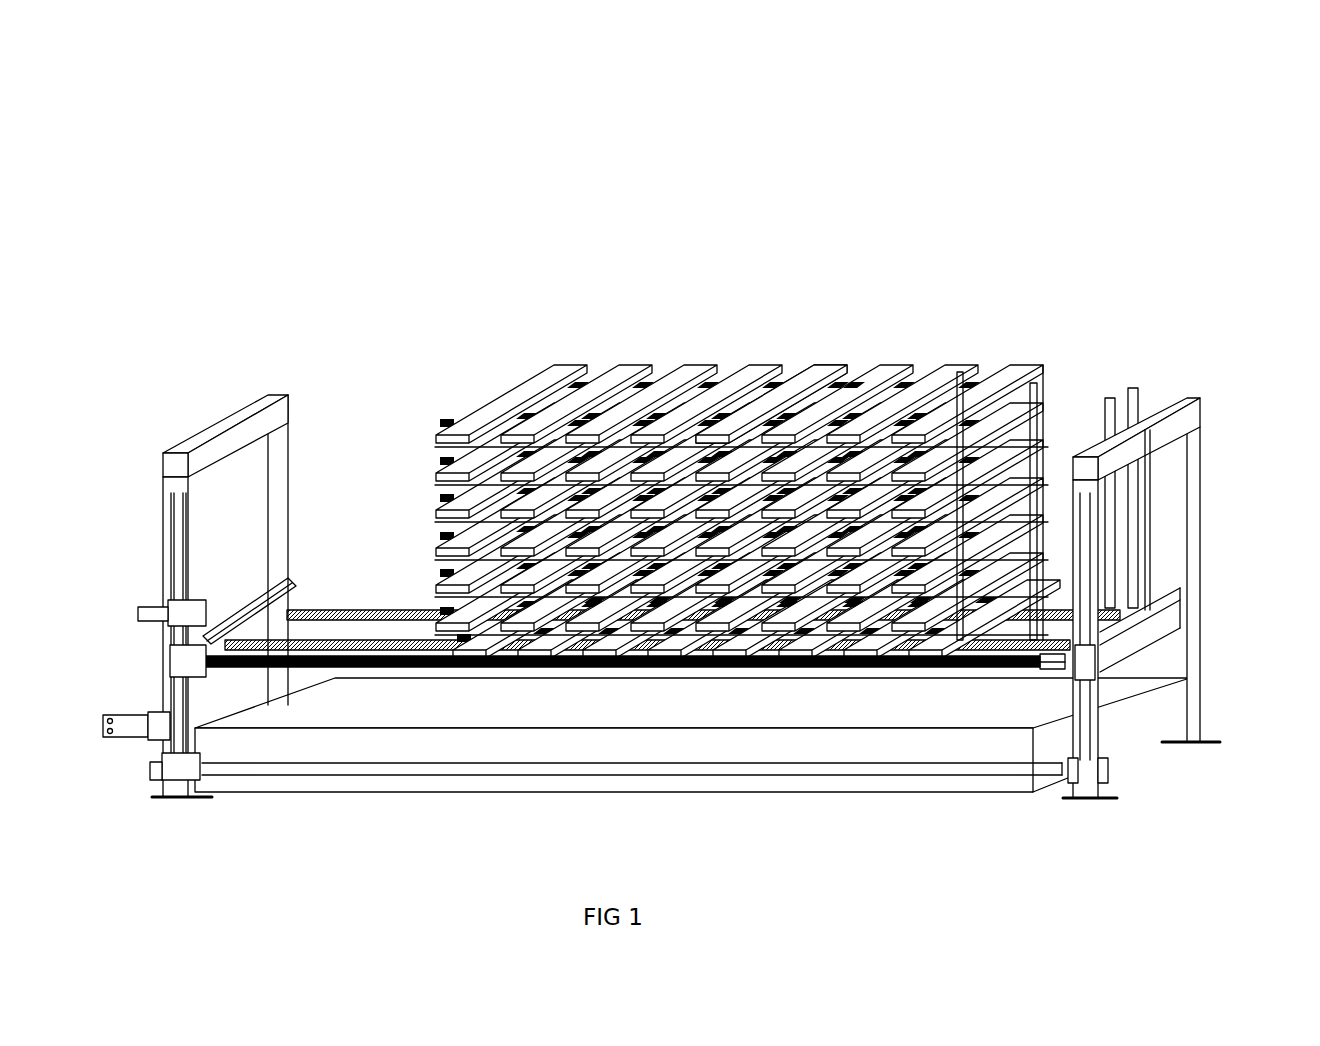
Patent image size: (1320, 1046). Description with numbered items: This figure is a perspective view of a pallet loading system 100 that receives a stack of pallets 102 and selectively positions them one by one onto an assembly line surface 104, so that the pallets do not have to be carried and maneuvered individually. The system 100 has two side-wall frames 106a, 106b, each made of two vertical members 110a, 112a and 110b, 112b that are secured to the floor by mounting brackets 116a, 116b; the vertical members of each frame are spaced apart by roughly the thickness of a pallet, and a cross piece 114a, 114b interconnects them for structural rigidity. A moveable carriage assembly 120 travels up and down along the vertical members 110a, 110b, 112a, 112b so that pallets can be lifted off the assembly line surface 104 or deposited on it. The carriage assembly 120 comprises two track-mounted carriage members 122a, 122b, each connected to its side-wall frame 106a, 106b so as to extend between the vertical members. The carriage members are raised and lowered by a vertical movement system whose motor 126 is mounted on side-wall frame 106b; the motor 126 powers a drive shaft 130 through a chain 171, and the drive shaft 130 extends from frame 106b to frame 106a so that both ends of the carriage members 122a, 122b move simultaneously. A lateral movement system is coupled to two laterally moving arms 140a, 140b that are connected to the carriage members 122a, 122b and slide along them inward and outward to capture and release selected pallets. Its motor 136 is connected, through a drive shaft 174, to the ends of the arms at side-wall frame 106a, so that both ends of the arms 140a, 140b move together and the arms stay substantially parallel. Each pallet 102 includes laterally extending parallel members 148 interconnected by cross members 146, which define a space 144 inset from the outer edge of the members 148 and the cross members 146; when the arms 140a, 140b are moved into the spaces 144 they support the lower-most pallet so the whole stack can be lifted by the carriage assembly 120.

The pallet loading system 100 is at (635, 215).
The pallets 102 is at (679, 443).
The assembly line surface 104 is at (692, 749).
The side-wall frame 106a is at (1154, 517).
The side-wall frame 106b is at (243, 572).
The vertical member 110a is at (1229, 584).
The vertical member 110b is at (336, 550).
The vertical member 112a is at (1059, 667).
The vertical member 112b is at (246, 669).
The cross piece 114a is at (1163, 402).
The cross piece 114b is at (185, 423).
The mounting bracket 116a is at (1155, 826).
The mounting bracket 116b is at (238, 853).
The moveable carriage assembly 120 is at (727, 463).
The carriage member 122a is at (1204, 630).
The carriage member 122b is at (183, 592).
The motor 126 is at (114, 754).
The drive shaft 130 is at (632, 817).
The motor 136 is at (126, 638).
The laterally moving arm 140a is at (647, 582).
The laterally moving arm 140b is at (703, 594).
The space 144 is at (1092, 472).
The cross member 146 is at (961, 318).
The laterally extending parallel member 148 is at (815, 343).
The chain 171 is at (92, 811).
The drive shaft 174 is at (635, 692).